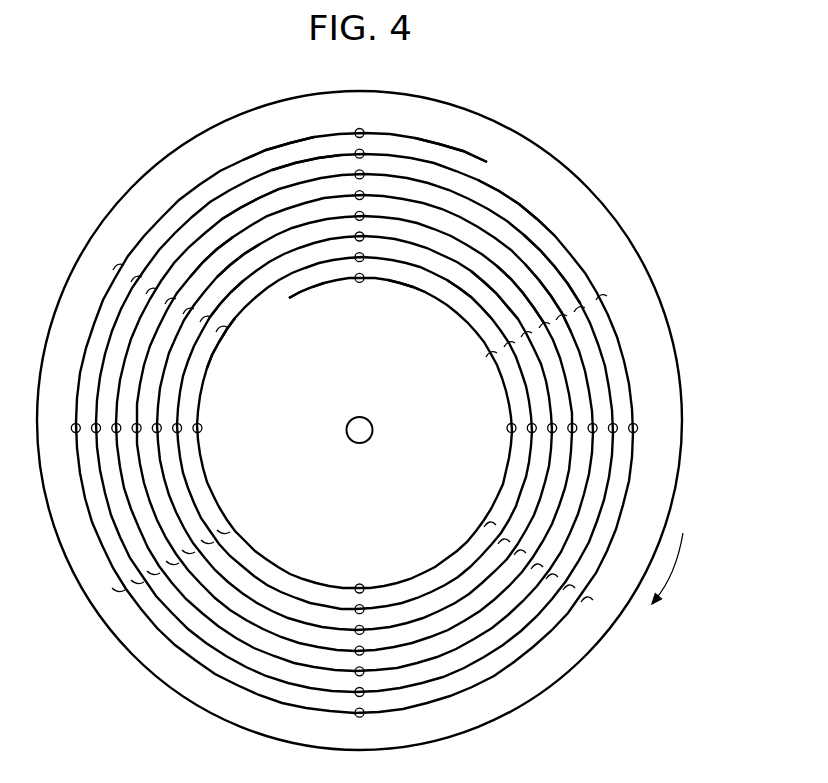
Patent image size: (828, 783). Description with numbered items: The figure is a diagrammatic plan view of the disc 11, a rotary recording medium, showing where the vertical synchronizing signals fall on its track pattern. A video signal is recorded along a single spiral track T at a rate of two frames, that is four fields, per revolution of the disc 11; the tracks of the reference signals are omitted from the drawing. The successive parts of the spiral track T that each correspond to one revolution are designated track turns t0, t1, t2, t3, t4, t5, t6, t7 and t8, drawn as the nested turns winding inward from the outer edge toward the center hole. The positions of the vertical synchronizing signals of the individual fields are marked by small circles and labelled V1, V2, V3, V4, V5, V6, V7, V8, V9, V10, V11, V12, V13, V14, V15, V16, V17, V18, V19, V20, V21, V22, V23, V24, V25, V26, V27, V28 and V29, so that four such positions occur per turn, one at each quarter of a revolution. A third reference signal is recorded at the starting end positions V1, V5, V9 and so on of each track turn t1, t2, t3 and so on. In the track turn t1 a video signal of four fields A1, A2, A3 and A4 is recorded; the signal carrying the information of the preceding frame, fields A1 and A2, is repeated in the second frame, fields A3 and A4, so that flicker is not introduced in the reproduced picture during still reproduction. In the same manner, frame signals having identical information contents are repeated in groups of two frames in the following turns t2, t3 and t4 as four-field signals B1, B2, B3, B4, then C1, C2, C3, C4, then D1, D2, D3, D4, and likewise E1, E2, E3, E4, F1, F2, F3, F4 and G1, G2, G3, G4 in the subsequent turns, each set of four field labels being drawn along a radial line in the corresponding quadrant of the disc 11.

The disc 11 is at (653, 300).
The spiral track T is at (184, 194).
The track turn t0 is at (443, 153).
The track turn t1 is at (274, 152).
The track turn t2 is at (312, 156).
The track turn t3 is at (243, 203).
The track turn t4 is at (200, 262).
The track turn t5 is at (238, 260).
The track turn t6 is at (214, 300).
The track turn t7 is at (214, 350).
The track turn t8 is at (315, 288).
The vertical synchronizing signal position V1 is at (365, 131).
The vertical synchronizing signal position V2 is at (73, 426).
The vertical synchronizing signal position V3 is at (356, 713).
The vertical synchronizing signal position V4 is at (637, 429).
The vertical synchronizing signal position V5 is at (365, 152).
The vertical synchronizing signal position V6 is at (96, 433).
The vertical synchronizing signal position V7 is at (356, 692).
The vertical synchronizing signal position V8 is at (615, 433).
The vertical synchronizing signal position V9 is at (365, 173).
The vertical synchronizing signal position V10 is at (114, 426).
The vertical synchronizing signal position V11 is at (356, 671).
The vertical synchronizing signal position V12 is at (596, 430).
The vertical synchronizing signal position V13 is at (365, 194).
The vertical synchronizing signal position V14 is at (134, 433).
The vertical synchronizing signal position V15 is at (356, 651).
The vertical synchronizing signal position V16 is at (570, 430).
The vertical synchronizing signal position V17 is at (365, 214).
The vertical synchronizing signal position V18 is at (159, 426).
The vertical synchronizing signal position V19 is at (356, 630).
The vertical synchronizing signal position V20 is at (550, 435).
The vertical synchronizing signal position V21 is at (365, 235).
The vertical synchronizing signal position V22 is at (179, 432).
The vertical synchronizing signal position V23 is at (356, 609).
The vertical synchronizing signal position V24 is at (530, 435).
The vertical synchronizing signal position V25 is at (365, 255).
The vertical synchronizing signal position V26 is at (202, 428).
The vertical synchronizing signal position V27 is at (362, 584).
The vertical synchronizing signal position V28 is at (507, 432).
The vertical synchronizing signal position V29 is at (360, 283).
The field A1 is at (110, 274).
The field B1 is at (128, 286).
The field C1 is at (143, 298).
The field D1 is at (162, 308).
The field E1 is at (180, 318).
The field F1 is at (197, 326).
The field G1 is at (213, 336).
The field A2 is at (112, 581).
The field B2 is at (131, 573).
The field C2 is at (147, 564).
The field D2 is at (166, 554).
The field E2 is at (182, 543).
The field F2 is at (201, 533).
The field G2 is at (217, 523).
The field A3 is at (586, 610).
The field B3 is at (568, 598).
The field C3 is at (552, 587).
The field D3 is at (537, 577).
The field E3 is at (519, 563).
The field F3 is at (502, 552).
The field G3 is at (490, 535).
The field A4 is at (611, 306).
The field B4 is at (589, 318).
The field C4 is at (571, 326).
The field D4 is at (555, 334).
The field E4 is at (535, 343).
The field F4 is at (518, 353).
The field G4 is at (502, 363).